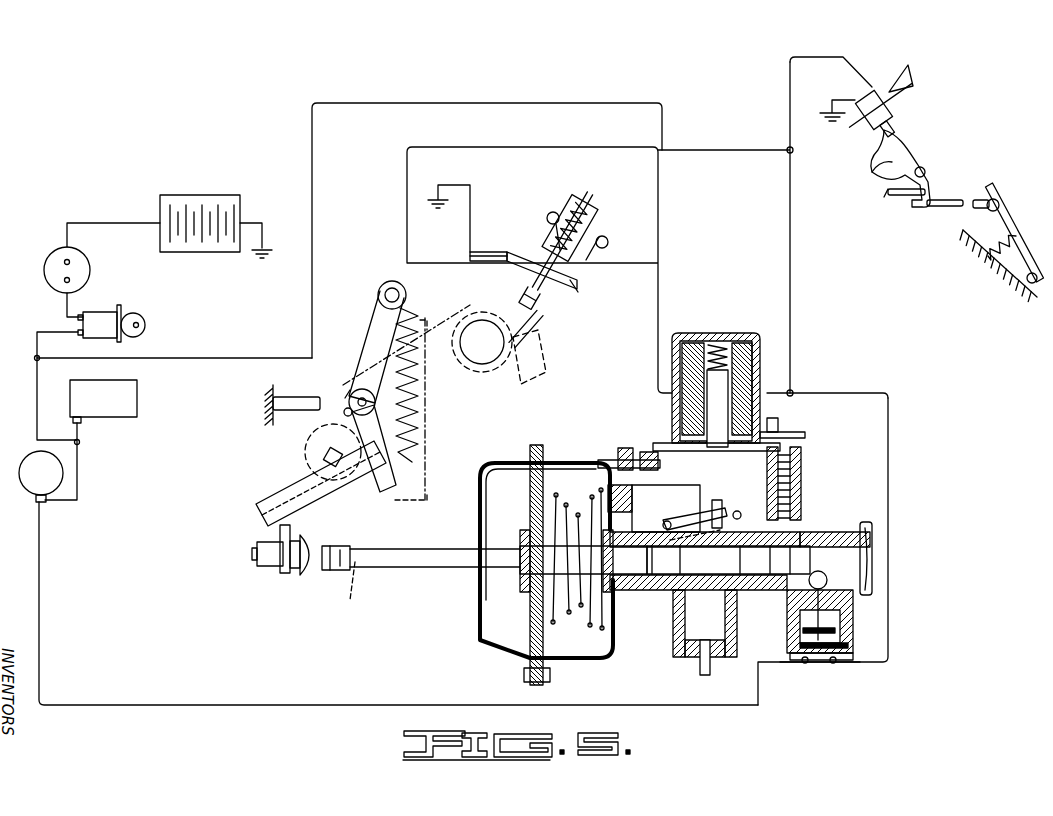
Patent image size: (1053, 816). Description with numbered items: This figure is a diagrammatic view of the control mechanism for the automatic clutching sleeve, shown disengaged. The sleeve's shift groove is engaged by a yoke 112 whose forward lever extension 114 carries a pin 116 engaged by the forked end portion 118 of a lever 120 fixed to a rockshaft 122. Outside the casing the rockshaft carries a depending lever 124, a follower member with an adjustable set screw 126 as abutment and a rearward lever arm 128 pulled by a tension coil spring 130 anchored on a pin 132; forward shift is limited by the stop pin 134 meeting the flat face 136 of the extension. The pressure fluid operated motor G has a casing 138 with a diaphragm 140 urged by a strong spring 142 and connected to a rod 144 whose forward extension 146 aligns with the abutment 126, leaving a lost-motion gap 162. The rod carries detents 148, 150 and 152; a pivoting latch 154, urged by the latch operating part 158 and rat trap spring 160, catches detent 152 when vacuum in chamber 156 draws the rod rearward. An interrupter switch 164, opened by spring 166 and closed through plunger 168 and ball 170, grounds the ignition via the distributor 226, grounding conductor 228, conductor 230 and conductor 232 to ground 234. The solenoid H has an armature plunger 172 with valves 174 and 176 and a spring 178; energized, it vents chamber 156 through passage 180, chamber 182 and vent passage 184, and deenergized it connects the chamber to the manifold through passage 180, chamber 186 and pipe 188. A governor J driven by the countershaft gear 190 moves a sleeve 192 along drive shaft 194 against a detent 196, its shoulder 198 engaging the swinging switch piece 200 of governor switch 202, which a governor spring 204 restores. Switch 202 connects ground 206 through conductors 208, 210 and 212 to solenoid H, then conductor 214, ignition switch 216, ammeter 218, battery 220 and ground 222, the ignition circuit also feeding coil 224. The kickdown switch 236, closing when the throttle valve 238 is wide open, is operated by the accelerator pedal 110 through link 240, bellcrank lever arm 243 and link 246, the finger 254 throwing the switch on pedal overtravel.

The accelerator pedal 110 is at (1003, 208).
The yoke 112 is at (410, 302).
The forward lever extension 114 is at (362, 389).
The pin 116 is at (347, 406).
The forked end portion 118 is at (350, 390).
The lever 120 is at (350, 400).
The rockshaft 122 is at (326, 455).
The depending lever 124 is at (256, 505).
The adjustable set screw 126 is at (298, 575).
The lever arm 128 is at (372, 485).
The tension coil spring 130 is at (415, 381).
The pin 132 is at (405, 292).
The stop pin 134 is at (300, 398).
The forward flat face 136 is at (305, 440).
The casing 138 is at (515, 460).
The diaphragm 140 is at (500, 468).
The spring 142 is at (548, 465).
The rod 144 is at (600, 563).
The forward extension 146 is at (408, 568).
The detent 148 is at (812, 552).
The detent 150 is at (820, 533).
The detent 152 is at (662, 578).
The pivoting latch 154 is at (695, 519).
The chamber 156 is at (590, 645).
The latch operating part 158 is at (730, 525).
The rat trap spring 160 is at (785, 520).
The gap 162 is at (346, 591).
The interrupter switch 164 is at (838, 630).
The switch opening spring 166 is at (850, 647).
The plunger 168 is at (850, 610).
The ball 170 is at (828, 580).
The armature plunger 172 is at (740, 395).
The valve 174 is at (790, 433).
The valve 176 is at (745, 490).
The spring 178 is at (718, 340).
The passage 180 is at (645, 530).
The chamber 182 is at (645, 452).
The vent passage 184 is at (655, 450).
The chamber 186 is at (615, 487).
The pipe 188 is at (700, 672).
The countershaft gear 190 is at (505, 325).
The sleeve 192 is at (578, 275).
The drive shaft 194 is at (545, 328).
The detent 196 is at (555, 310).
The shoulder 198 is at (580, 288).
The swinging switch piece 200 is at (540, 265).
The governor switch 202 is at (485, 252).
The governor spring 204 is at (605, 225).
The ground 206 is at (438, 212).
The conductor 208 is at (407, 213).
The conductor 210 is at (792, 235).
The conductor 212 is at (767, 395).
The conductor 214 is at (542, 103).
The ignition switch 216 is at (135, 312).
The ammeter 218 is at (92, 270).
The battery 220 is at (203, 195).
The ground 222 is at (254, 262).
The coil 224 is at (137, 403).
The distributor 226 is at (19, 470).
The grounding conductor 228 is at (258, 705).
The conductor 230 is at (888, 500).
The conductor 232 is at (815, 57).
The ground 234 is at (833, 125).
The kickdown switch 236 is at (885, 106).
The throttle valve 238 is at (892, 130).
The link 240 is at (953, 200).
The bellcrank lever arm 243 is at (908, 155).
The link 246 is at (905, 197).
The finger 254 is at (878, 165).
The pressure fluid operated motor G is at (620, 452).
The solenoid H is at (760, 372).
The governor J is at (605, 205).